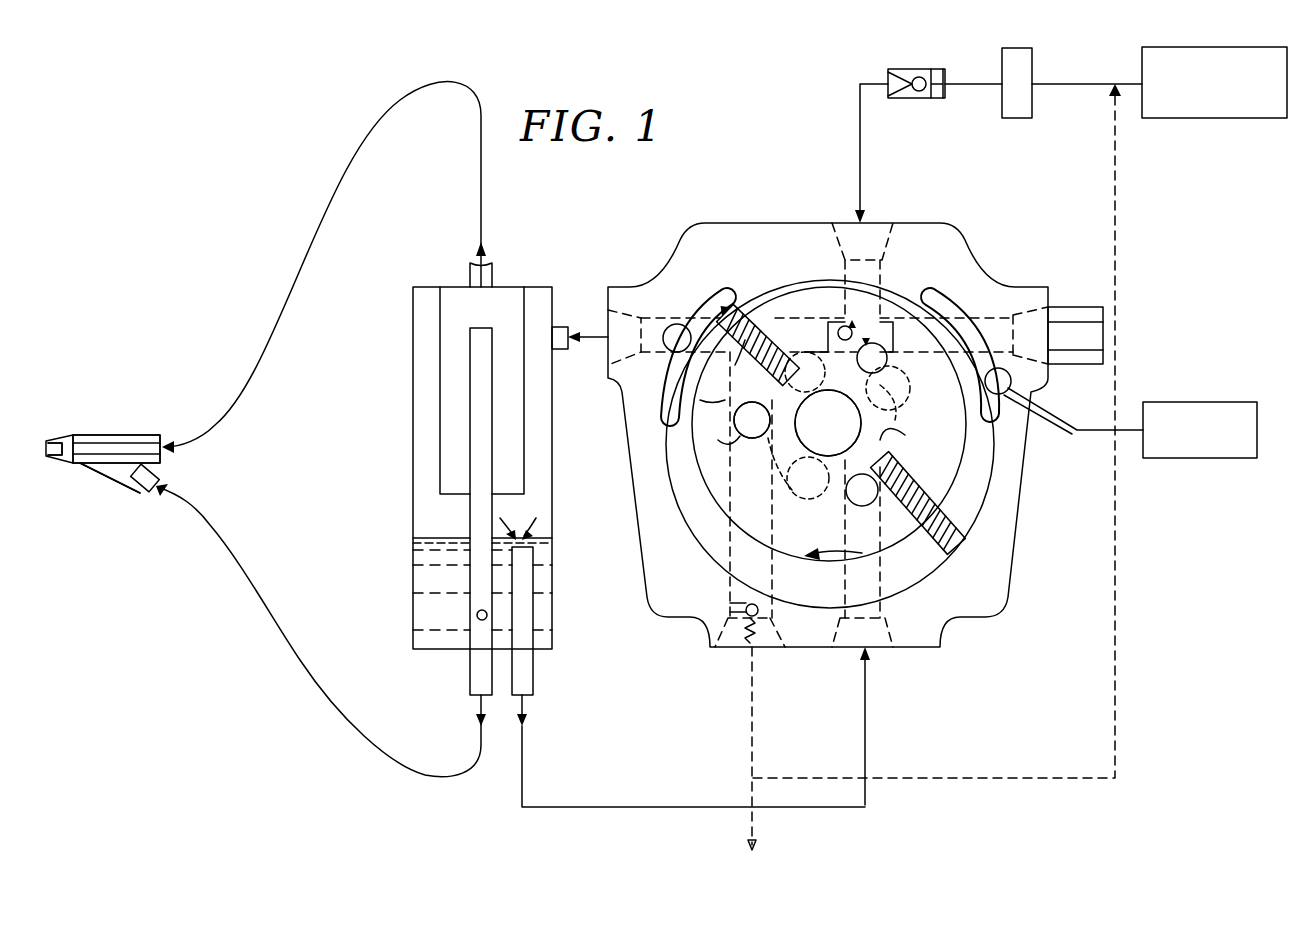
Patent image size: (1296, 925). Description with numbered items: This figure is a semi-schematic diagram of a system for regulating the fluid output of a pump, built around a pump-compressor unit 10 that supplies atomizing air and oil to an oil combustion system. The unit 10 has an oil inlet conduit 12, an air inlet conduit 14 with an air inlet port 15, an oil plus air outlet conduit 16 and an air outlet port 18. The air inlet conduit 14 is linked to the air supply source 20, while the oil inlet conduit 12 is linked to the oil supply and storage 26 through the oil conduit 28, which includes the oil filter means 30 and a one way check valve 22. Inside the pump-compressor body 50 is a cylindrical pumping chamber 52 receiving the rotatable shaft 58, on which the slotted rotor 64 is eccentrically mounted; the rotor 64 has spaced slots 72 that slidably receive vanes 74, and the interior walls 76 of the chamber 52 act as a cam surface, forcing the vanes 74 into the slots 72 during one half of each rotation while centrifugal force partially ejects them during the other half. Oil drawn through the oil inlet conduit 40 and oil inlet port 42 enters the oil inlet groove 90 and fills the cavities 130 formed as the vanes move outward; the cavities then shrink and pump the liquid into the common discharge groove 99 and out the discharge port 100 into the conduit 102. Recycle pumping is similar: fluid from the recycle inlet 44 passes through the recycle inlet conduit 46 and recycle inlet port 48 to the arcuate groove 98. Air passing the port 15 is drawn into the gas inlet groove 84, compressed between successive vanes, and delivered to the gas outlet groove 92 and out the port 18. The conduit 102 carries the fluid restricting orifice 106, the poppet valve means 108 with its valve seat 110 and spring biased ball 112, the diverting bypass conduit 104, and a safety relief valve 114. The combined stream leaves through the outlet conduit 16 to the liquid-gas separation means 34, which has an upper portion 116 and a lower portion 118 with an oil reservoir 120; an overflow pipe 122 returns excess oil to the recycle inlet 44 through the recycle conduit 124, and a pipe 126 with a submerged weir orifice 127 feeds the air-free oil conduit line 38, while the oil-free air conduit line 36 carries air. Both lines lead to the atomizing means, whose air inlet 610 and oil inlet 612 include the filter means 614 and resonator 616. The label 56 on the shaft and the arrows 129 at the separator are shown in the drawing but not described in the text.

The pump-compressor unit 10 is at (656, 608).
The oil inlet conduit 12 is at (868, 78).
The air inlet conduit 14 is at (1058, 425).
The air inlet port 15 is at (1012, 382).
The oil plus air outlet conduit 16 is at (592, 340).
The air outlet port 18 is at (672, 326).
The air supply source 20 is at (1222, 460).
The one way check valve 22 is at (930, 68).
The oil supply and storage 26 is at (1184, 46).
The oil conduit 28 is at (1086, 82).
The oil filter means 30 is at (1032, 50).
The liquid-gas separation means 34 is at (410, 657).
The oil-free air conduit line 36 is at (276, 320).
The air-free oil conduit line 38 is at (278, 646).
The oil inlet conduit 40 is at (835, 268).
The oil inlet port 42 is at (862, 368).
The accumulated combined fluid recycle inlet 44 is at (878, 650).
The recycle inlet conduit 46 is at (840, 620).
The recycle inlet port 48 is at (852, 500).
The pump-compressor body 50 is at (684, 620).
The cylindrical pumping chamber 52 is at (697, 540).
The shaft 56 is at (828, 423).
The rotatable shaft 58 is at (815, 426).
The slotted rotor 64 is at (893, 548).
The slots 72 is at (738, 358).
The vanes 74 is at (890, 528).
The interior walls of pumping chamber 76 is at (877, 588).
The gas inlet groove 84 is at (972, 412).
The oil inlet groove 90 is at (900, 376).
The gas outlet groove 92 is at (672, 412).
The arcuate groove 98 is at (908, 440).
The common discharge groove 99 is at (803, 468).
The discharge port 100 is at (726, 427).
The conduit 102 is at (725, 418).
The diverting bypass conduit 104 is at (756, 310).
The fluid restricting orifice 106 is at (712, 316).
The poppet valve means 108 is at (866, 300).
The valve seat 110 is at (835, 334).
The spring biased ball 112 is at (838, 330).
The safety relief valve 114 is at (745, 611).
The upper portion 116 is at (452, 370).
The lower portion 118 is at (404, 548).
The oil reservoir 120 is at (427, 620).
The overflow pipe 122 is at (688, 695).
The recycle conduit 124 is at (698, 809).
The pipe 126 is at (474, 522).
The submerged weir orifice 127 is at (481, 620).
The flow 129 is at (538, 540).
The cavities 130 is at (787, 372).
The air inlet 610 is at (162, 436).
The oil inlet 612 is at (160, 498).
The filter means 614 is at (134, 490).
The resonator 616 is at (52, 458).